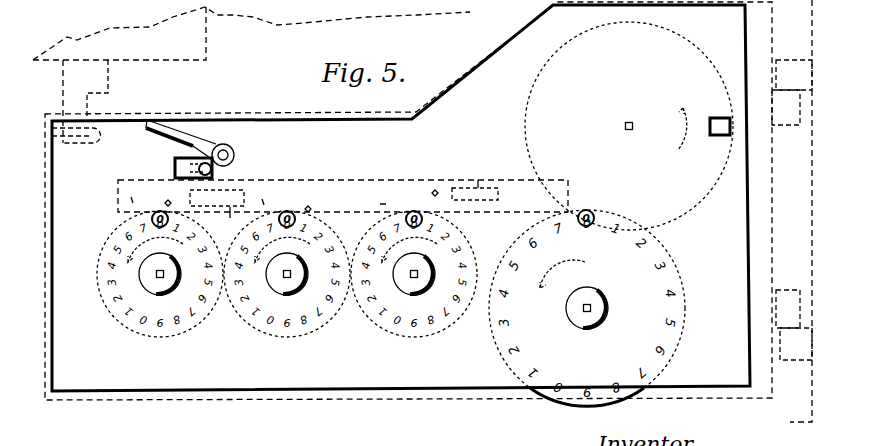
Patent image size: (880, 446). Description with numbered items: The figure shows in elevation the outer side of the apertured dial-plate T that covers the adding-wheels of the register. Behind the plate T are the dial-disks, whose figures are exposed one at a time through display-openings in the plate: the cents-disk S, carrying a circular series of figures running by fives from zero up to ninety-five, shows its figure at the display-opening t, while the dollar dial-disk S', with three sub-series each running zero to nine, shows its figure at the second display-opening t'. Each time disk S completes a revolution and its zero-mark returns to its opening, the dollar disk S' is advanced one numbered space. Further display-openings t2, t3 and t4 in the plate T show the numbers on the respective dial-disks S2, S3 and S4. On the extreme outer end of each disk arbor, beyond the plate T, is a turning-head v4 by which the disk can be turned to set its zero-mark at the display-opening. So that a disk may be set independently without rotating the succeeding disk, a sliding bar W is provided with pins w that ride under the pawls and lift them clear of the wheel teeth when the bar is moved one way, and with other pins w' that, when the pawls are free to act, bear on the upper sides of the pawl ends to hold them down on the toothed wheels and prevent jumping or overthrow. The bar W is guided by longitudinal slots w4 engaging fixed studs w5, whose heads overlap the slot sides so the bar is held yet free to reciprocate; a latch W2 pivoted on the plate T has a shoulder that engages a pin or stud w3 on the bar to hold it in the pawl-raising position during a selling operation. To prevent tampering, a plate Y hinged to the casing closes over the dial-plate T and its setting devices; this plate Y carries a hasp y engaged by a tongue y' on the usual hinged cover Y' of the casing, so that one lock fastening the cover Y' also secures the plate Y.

The dial-plate T is at (401, 198).
The plate Y is at (428, 212).
The hinged cover Y' is at (251, 75).
The hasp y is at (79, 145).
The tongue y' is at (107, 88).
The sliding bar W is at (176, 168).
The latch W2 is at (208, 142).
The pins w is at (305, 207).
The pins w' is at (243, 201).
The pin or stud w3 is at (214, 170).
The longitudinal slots w4 is at (358, 197).
The studs w5 is at (510, 194).
The cents-disk S is at (635, 126).
The dollar dial-disk S' is at (603, 314).
The dial-disk S2 is at (444, 332).
The dial-disk S3 is at (317, 332).
The dial-disk S4 is at (190, 332).
The display-opening t is at (711, 140).
The display-opening t' is at (574, 237).
The display-opening t2 is at (413, 211).
The display-opening t3 is at (286, 211).
The display-opening t4 is at (159, 211).
The turning-head v4 is at (146, 290).